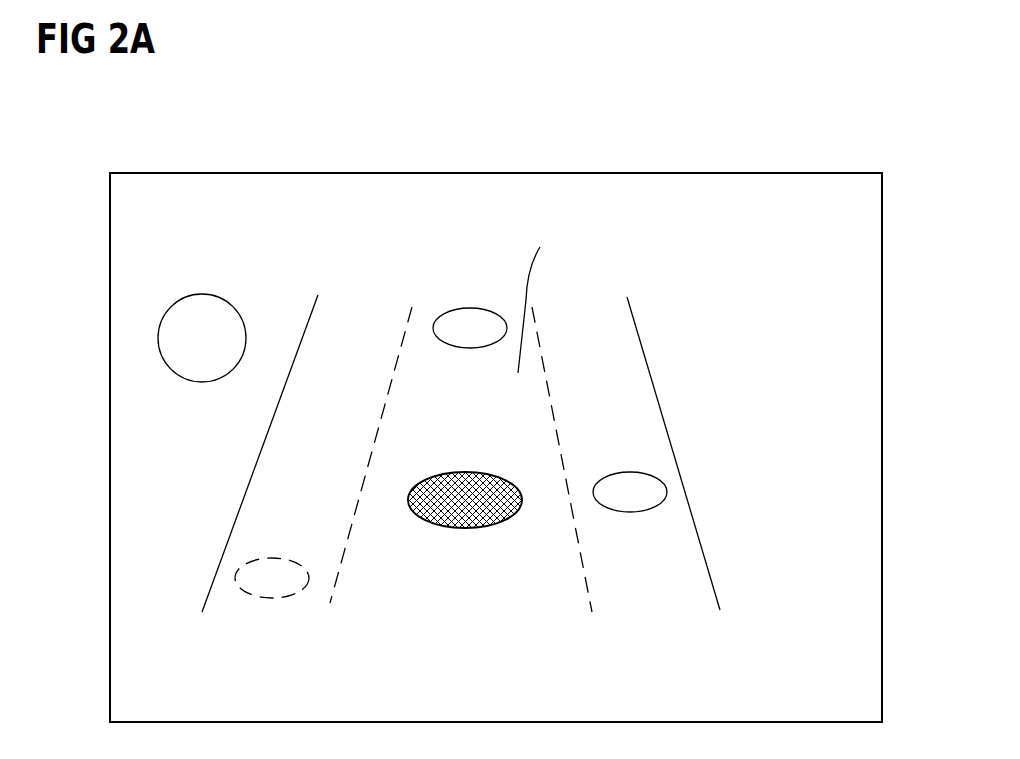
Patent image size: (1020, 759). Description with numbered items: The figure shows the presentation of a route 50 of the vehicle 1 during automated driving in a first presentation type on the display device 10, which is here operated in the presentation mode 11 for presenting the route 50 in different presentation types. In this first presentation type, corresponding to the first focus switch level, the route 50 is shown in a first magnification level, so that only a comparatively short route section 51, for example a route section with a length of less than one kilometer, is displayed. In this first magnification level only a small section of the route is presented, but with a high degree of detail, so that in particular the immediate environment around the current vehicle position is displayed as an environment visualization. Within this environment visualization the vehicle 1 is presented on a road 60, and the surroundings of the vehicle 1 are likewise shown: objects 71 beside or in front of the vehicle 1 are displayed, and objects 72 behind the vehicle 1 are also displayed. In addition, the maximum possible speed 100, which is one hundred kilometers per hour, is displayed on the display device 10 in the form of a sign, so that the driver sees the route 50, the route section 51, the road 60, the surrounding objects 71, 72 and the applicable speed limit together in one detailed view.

The vehicle 1 is at (467, 535).
The display device 10 is at (650, 173).
The presentation mode 11 is at (685, 295).
The route 50 is at (645, 258).
The route section 51 is at (700, 372).
The road 60 is at (557, 296).
The objects beside or in front of the vehicle 71 is at (468, 305).
The objects behind the vehicle 72 is at (272, 593).
The maximum possible speed 100 is at (202, 338).